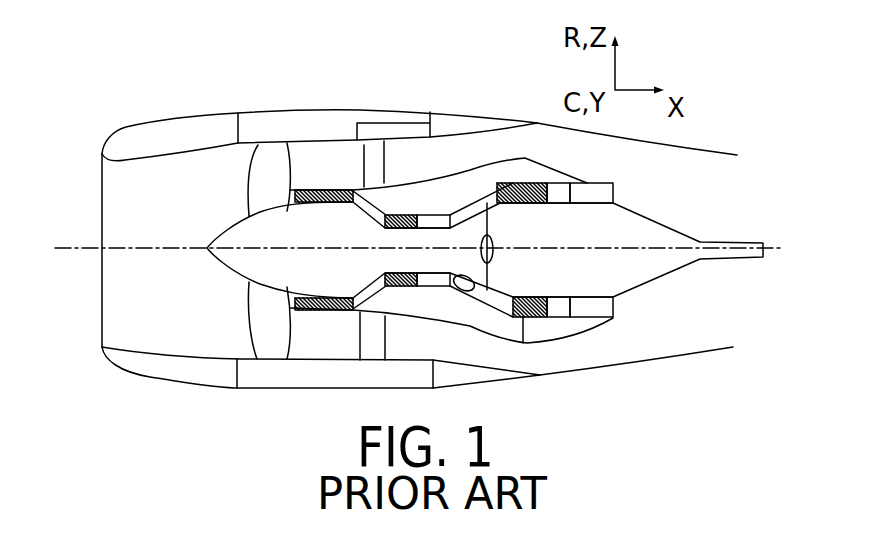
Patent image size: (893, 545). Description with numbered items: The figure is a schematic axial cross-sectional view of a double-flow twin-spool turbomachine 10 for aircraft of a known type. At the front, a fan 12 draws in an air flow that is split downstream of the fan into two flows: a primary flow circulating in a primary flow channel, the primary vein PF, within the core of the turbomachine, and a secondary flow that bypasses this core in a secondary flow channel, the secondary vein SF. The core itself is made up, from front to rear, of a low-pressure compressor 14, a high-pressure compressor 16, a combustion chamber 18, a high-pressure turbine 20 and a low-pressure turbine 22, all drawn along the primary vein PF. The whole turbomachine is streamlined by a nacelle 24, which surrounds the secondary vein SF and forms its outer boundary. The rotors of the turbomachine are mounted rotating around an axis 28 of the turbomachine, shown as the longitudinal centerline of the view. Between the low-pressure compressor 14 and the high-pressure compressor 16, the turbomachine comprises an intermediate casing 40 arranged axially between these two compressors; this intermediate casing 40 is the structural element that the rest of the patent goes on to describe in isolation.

The turbomachine 10 is at (235, 78).
The fan 12 is at (270, 318).
The low-pressure compressor 14 is at (313, 179).
The high-pressure compressor 16 is at (410, 211).
The combustion chamber 18 is at (461, 201).
The high-pressure turbine 20 is at (487, 194).
The low-pressure turbine 22 is at (533, 172).
The nacelle 24 is at (355, 127).
The axis 28 is at (83, 247).
The intermediate casing 40 is at (400, 338).
The primary vein PF is at (375, 312).
The secondary vein SF is at (307, 343).